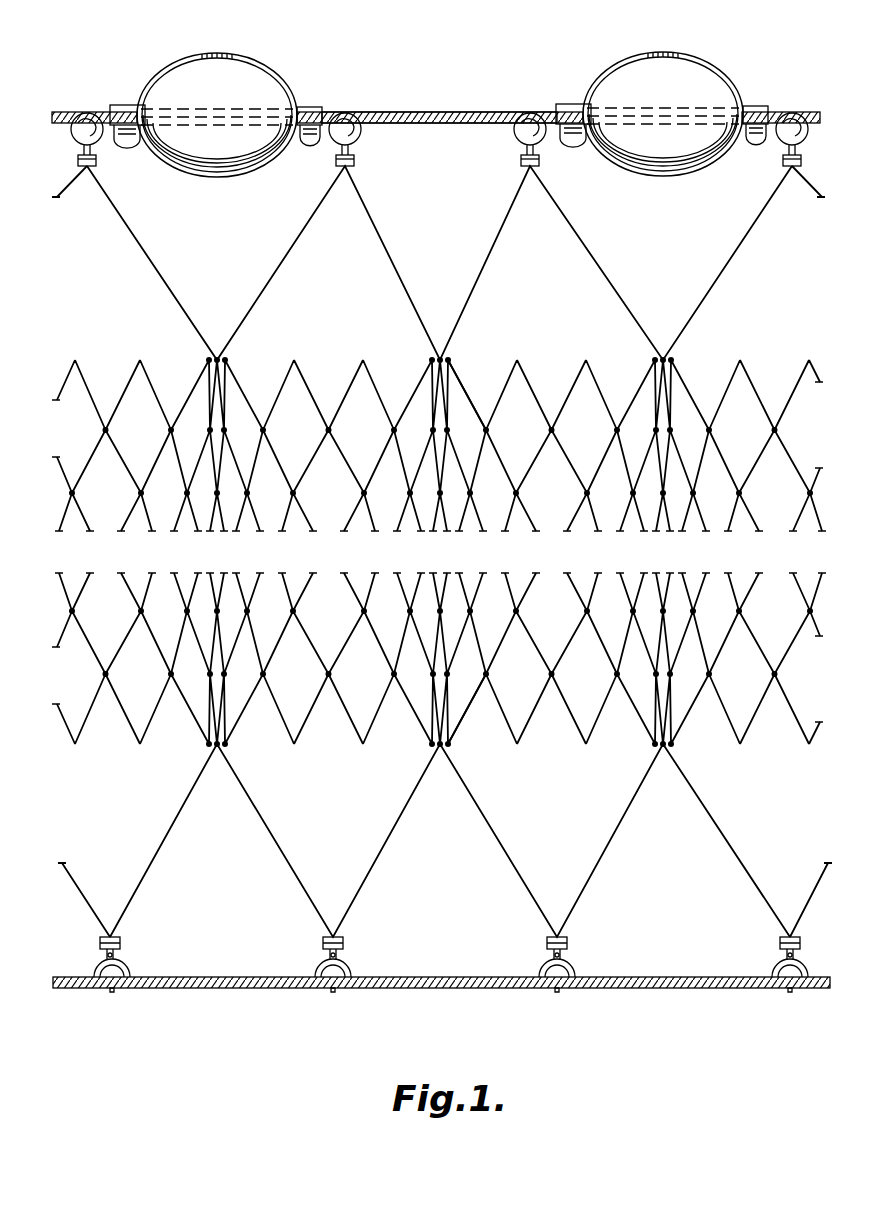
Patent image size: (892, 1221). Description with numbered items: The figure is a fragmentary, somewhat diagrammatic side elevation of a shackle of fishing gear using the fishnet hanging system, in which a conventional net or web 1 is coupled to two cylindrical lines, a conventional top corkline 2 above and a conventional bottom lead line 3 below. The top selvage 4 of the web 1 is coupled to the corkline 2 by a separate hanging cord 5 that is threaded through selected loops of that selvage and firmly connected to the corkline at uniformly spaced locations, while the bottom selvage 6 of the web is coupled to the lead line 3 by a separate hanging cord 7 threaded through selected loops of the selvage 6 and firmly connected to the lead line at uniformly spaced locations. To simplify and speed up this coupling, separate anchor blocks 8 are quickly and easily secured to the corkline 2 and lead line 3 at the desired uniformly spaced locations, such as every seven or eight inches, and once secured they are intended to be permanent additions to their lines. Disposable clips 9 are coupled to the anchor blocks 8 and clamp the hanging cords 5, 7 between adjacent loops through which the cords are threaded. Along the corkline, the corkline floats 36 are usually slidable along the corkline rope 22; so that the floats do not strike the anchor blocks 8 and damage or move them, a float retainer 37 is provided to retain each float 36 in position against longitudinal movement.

The web 1 is at (343, 386).
The top corkline 2 is at (438, 104).
The bottom lead line 3 is at (440, 996).
The top selvage 4 is at (463, 380).
The hanging cord 5 is at (467, 320).
The bottom selvage 6 is at (473, 712).
The hanging cord 7 is at (460, 760).
The anchor blocks 8 is at (331, 141).
The disposable clips 9 is at (347, 167).
The corkline rope 22 is at (468, 111).
The corkline floats 36 is at (258, 88).
The float retainer 37 is at (220, 51).